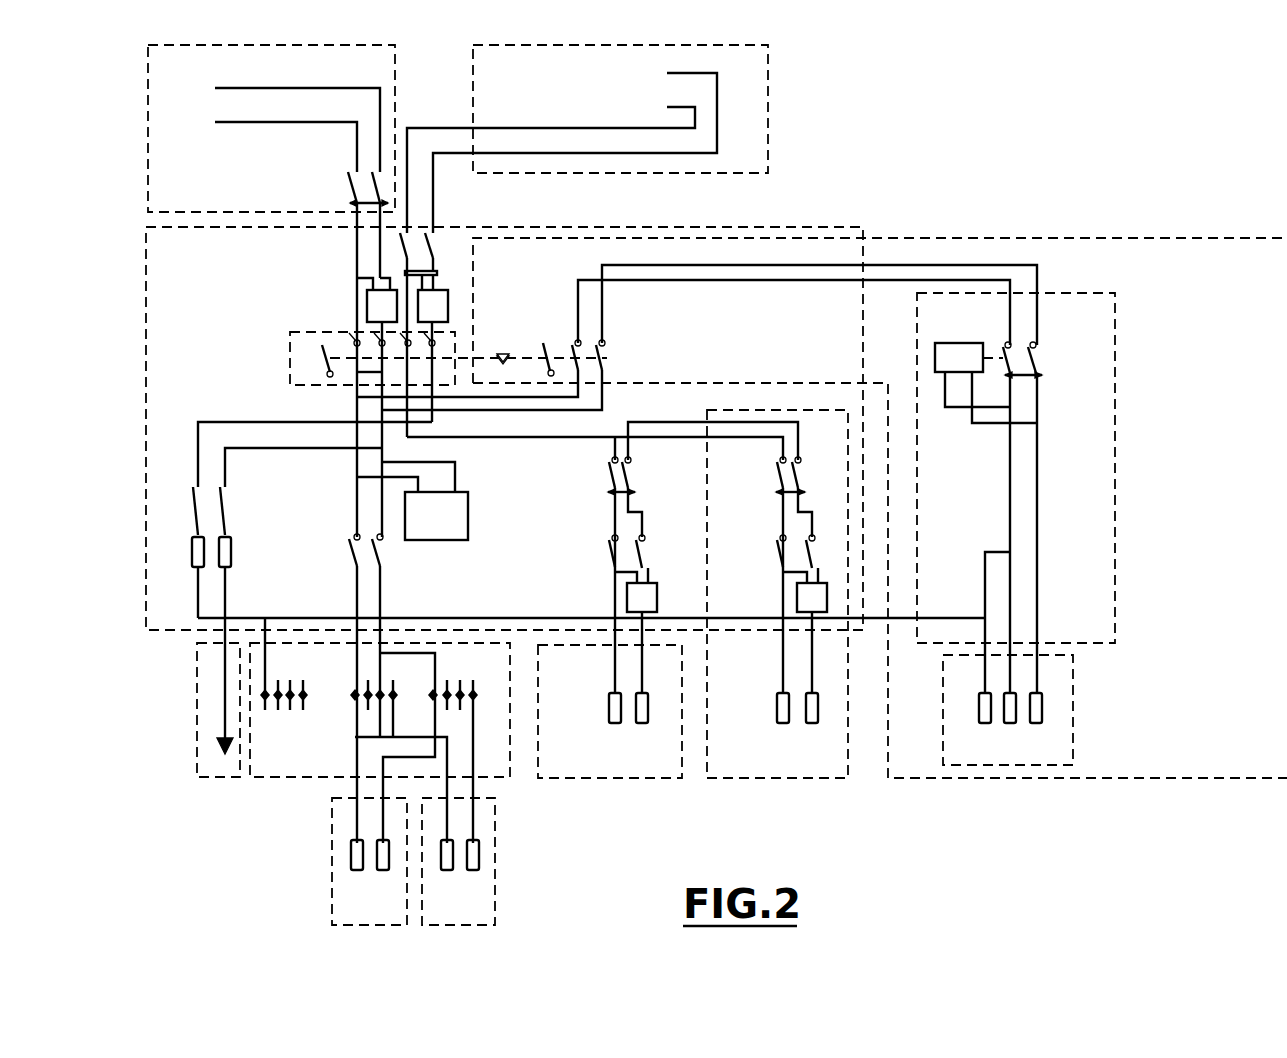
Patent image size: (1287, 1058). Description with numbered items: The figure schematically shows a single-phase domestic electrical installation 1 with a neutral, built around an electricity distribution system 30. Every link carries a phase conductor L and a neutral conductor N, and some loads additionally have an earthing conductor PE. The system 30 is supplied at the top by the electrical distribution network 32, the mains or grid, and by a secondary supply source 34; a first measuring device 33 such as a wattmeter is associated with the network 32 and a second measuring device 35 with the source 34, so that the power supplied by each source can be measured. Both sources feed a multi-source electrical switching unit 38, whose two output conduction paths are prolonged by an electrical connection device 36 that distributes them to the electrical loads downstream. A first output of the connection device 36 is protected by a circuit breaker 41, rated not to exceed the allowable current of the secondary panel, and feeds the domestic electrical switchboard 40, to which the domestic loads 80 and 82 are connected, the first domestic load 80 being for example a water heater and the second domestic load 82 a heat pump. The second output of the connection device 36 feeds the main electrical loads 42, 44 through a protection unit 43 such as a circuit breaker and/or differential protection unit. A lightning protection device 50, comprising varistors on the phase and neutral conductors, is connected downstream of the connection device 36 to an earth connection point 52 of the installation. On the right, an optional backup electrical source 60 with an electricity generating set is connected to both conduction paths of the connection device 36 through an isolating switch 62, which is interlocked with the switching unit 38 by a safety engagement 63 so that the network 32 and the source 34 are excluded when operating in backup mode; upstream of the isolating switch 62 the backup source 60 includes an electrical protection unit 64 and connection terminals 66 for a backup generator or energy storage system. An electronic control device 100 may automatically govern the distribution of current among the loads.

The domestic installation 1 is at (1108, 122).
The electricity distribution system 30 is at (809, 226).
The electrical distribution network 32 is at (140, 150).
The first measuring device 33 is at (363, 298).
The secondary supply source 34 is at (774, 128).
The second measuring device 35 is at (448, 298).
The electrical connection device 36 is at (332, 405).
The multi-source electrical switching unit 38 is at (313, 330).
The domestic electrical switchboard 40 is at (285, 779).
The circuit breaker 41 is at (338, 548).
The main electrical load 42 is at (637, 779).
The protection unit 43 is at (578, 542).
The main electrical load 44 is at (784, 781).
The lightning protection device 50 is at (182, 558).
The earth connection point 52 is at (197, 727).
The backup electrical source 60 is at (1184, 236).
The isolating switch 62 is at (612, 352).
The safety engagement 63 is at (502, 338).
The electrical protection unit 64 is at (1117, 455).
The connection terminals 66 is at (1075, 737).
The first domestic load 80 is at (332, 842).
The second domestic load 82 is at (495, 842).
The electronic control device 100 is at (436, 516).